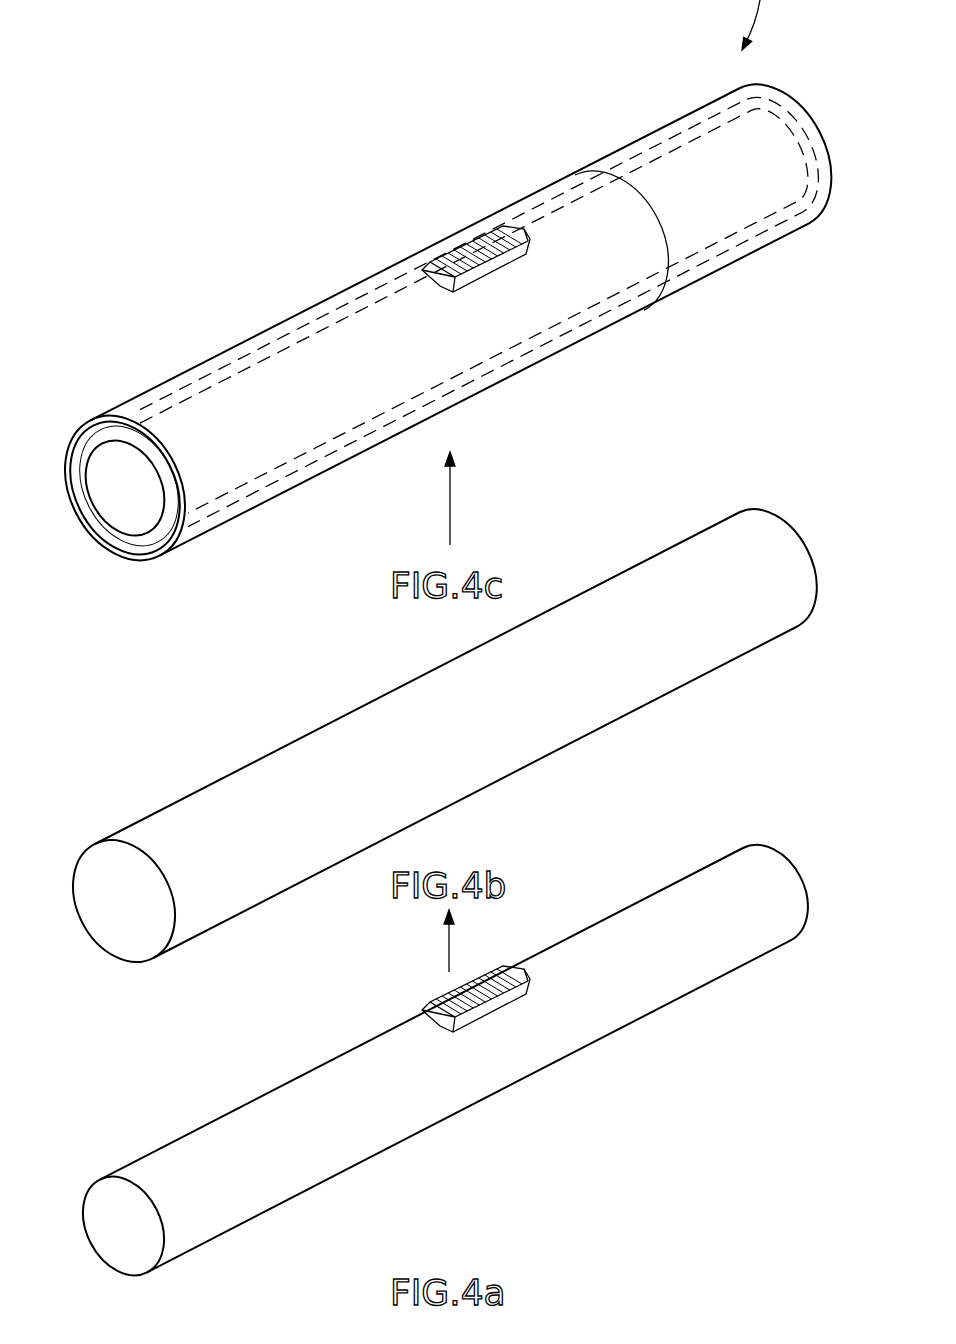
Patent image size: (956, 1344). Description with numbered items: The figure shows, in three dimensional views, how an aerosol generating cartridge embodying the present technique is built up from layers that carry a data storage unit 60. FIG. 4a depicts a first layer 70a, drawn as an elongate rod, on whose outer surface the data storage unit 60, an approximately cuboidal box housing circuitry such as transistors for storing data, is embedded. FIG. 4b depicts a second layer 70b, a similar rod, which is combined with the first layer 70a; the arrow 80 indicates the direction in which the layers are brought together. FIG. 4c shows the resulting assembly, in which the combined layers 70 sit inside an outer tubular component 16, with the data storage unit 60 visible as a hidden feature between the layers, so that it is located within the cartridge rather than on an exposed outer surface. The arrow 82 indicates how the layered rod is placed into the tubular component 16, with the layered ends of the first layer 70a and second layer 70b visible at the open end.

In FIG. 4c, the tubular housing 16 is at (738, 263).
In FIG. 4a, the data storage unit 60 is at (488, 972).
In FIG. 4c, the data storage unit 60 is at (458, 262).
In FIG. 4c, the rod assembly 70 is at (78, 428).
In FIG. 4a, the rod 70a is at (788, 853).
In FIG. 4b, the rod 70a is at (790, 523).
In FIG. 4c, the rod 70a is at (140, 545).
In FIG. 4c, the sheath 70b is at (118, 552).
In FIG. 4a, the insertion direction arrow 80 is at (447, 952).
In FIG. 4c, the insertion direction arrow 82 is at (455, 525).